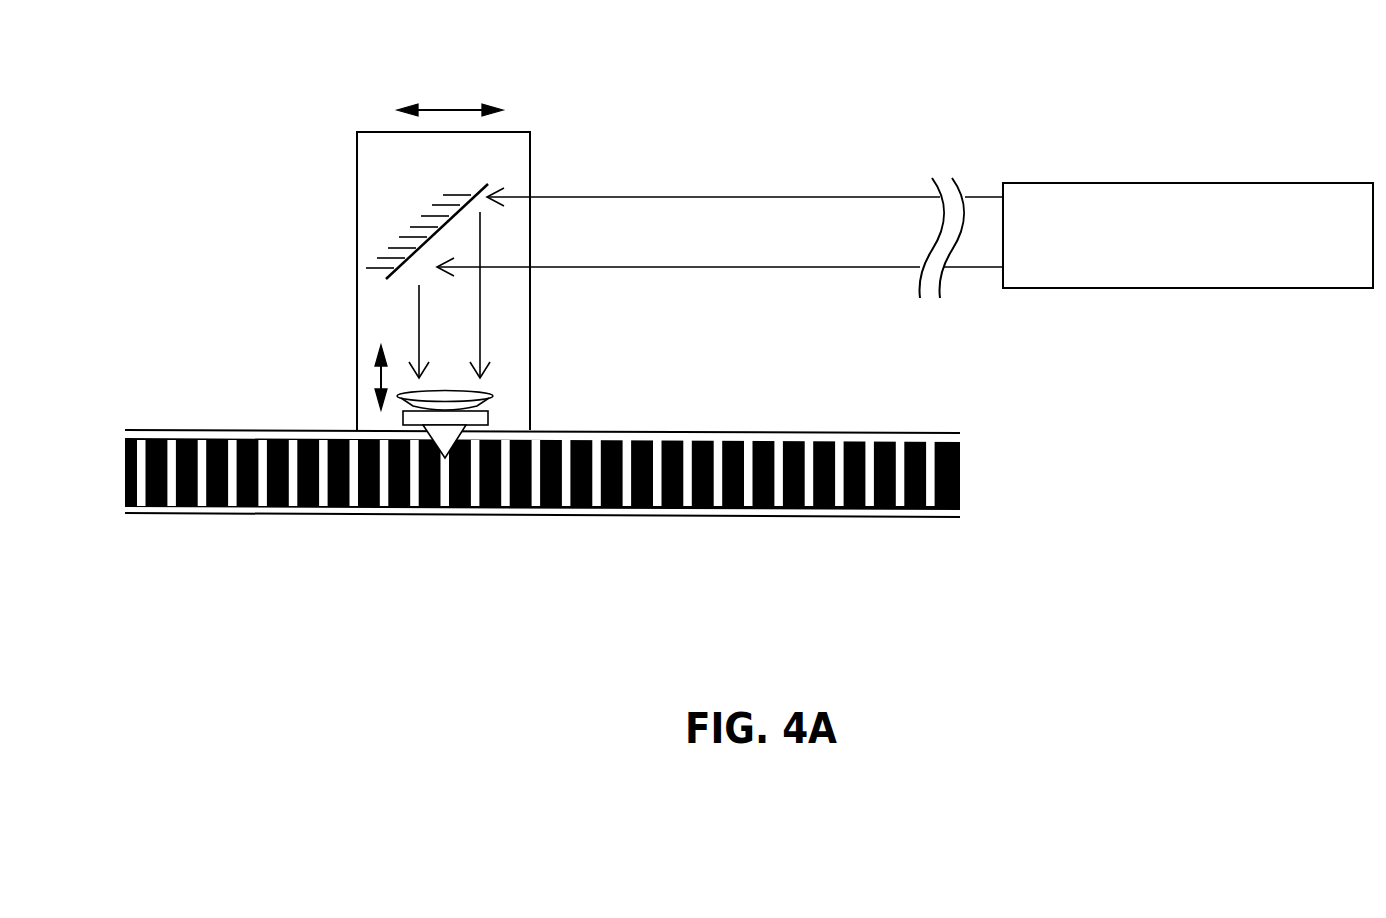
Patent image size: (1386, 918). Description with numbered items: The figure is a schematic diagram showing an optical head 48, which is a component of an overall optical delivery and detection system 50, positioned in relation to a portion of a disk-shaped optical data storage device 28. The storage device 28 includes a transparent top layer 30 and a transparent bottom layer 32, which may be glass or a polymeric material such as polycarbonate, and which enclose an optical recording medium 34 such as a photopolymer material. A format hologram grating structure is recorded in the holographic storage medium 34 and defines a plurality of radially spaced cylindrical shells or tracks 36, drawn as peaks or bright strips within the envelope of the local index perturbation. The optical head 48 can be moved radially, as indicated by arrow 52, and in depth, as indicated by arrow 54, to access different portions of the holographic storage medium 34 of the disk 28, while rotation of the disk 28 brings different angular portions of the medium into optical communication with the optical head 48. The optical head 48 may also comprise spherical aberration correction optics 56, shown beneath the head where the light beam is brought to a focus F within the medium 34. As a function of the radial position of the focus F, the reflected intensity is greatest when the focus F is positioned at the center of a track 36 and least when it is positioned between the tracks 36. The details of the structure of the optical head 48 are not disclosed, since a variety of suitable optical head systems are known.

The optical data storage device 28 is at (572, 452).
The top layer 30 is at (790, 433).
The bottom layer 32 is at (788, 517).
The optical recording medium 34 is at (960, 482).
The tracks 36 is at (437, 508).
The optical head 48 is at (533, 160).
The optical delivery and detection system 50 is at (862, 140).
The arrow 52 is at (437, 106).
The arrow 54 is at (378, 378).
The spherical aberration correction optics 56 is at (490, 415).
The focus F is at (446, 460).